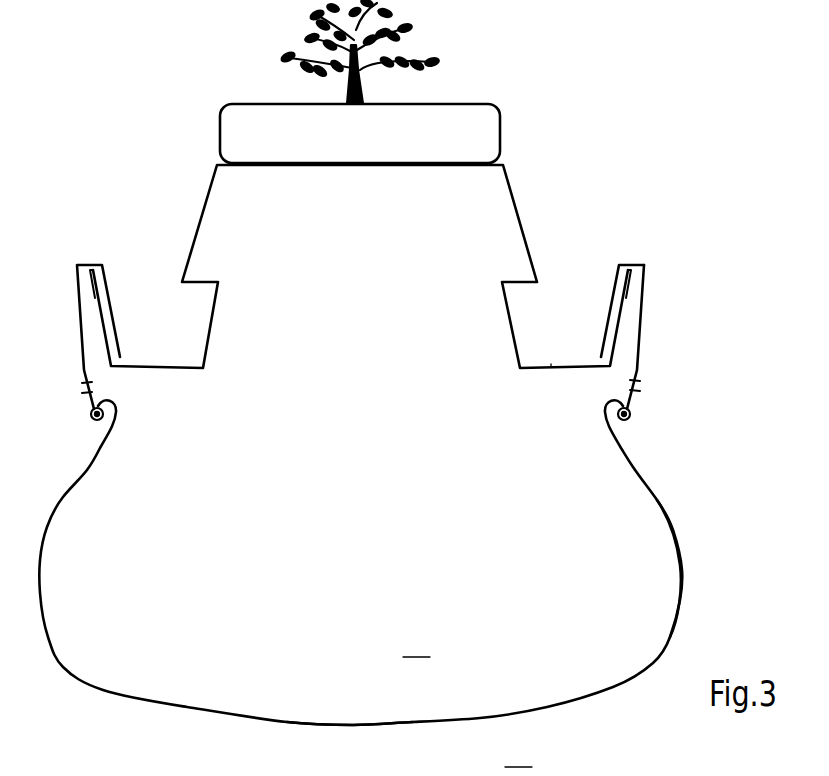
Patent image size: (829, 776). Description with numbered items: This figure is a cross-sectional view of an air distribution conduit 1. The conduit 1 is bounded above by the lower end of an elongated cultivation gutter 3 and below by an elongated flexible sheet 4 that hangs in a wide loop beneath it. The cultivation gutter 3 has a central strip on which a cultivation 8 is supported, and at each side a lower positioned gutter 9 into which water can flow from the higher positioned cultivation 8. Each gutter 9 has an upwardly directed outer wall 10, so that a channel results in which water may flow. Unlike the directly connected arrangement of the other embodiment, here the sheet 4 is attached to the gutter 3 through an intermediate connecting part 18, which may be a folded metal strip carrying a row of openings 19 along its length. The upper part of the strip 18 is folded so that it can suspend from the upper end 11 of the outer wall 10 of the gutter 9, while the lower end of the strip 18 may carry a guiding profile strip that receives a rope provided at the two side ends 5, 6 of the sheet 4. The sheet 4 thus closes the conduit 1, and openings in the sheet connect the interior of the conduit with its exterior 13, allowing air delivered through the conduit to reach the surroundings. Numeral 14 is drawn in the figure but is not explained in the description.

The air distribution conduit 1 is at (647, 523).
The elongated cultivation gutter 3 is at (510, 187).
The elongated flexible sheet 4 is at (680, 607).
The side end of the sheet 5 is at (93, 415).
The side end of the sheet 6 is at (632, 412).
The cultivation 8 is at (465, 117).
The lower positioned gutter 9 is at (551, 365).
The outer wall 10 is at (620, 313).
The upper end of the outer wall 11 is at (633, 273).
The exterior of the conduit 13 is at (417, 643).
The bottom 14 is at (410, 744).
The intermediate connecting part 18 is at (637, 357).
The openings 19 is at (638, 387).